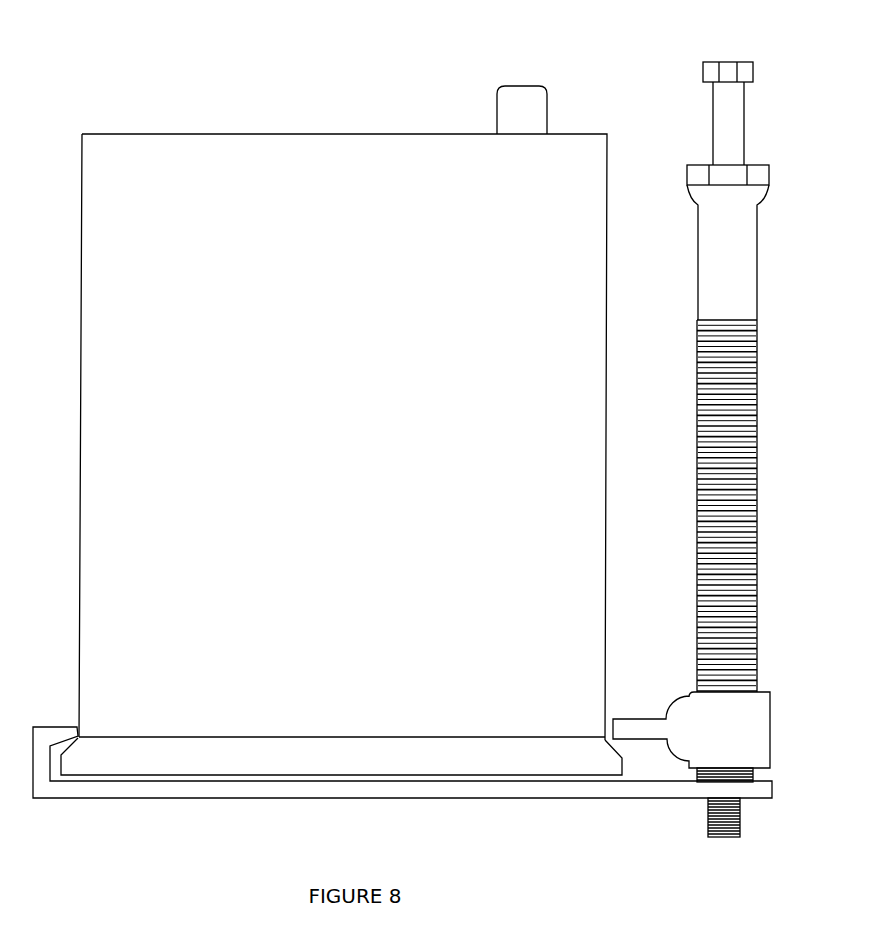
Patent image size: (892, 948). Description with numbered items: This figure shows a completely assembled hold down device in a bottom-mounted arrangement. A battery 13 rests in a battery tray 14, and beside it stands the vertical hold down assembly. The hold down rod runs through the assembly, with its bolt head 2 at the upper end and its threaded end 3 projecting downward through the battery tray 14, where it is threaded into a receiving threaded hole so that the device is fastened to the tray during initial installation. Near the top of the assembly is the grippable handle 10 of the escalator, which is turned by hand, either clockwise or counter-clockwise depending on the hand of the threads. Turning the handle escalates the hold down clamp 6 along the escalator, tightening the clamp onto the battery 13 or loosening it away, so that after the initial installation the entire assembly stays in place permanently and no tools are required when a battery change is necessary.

The bolt head 2 is at (729, 60).
The grippable handle 10 is at (718, 222).
The hold down clamp 6 is at (730, 722).
The threaded end 3 is at (740, 823).
The battery 13 is at (268, 170).
The battery tray 14 is at (270, 787).